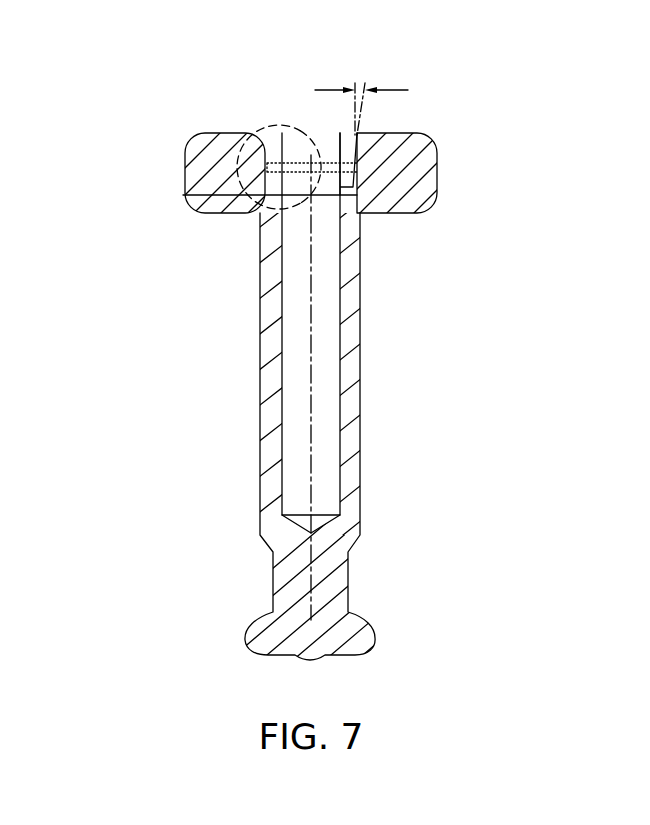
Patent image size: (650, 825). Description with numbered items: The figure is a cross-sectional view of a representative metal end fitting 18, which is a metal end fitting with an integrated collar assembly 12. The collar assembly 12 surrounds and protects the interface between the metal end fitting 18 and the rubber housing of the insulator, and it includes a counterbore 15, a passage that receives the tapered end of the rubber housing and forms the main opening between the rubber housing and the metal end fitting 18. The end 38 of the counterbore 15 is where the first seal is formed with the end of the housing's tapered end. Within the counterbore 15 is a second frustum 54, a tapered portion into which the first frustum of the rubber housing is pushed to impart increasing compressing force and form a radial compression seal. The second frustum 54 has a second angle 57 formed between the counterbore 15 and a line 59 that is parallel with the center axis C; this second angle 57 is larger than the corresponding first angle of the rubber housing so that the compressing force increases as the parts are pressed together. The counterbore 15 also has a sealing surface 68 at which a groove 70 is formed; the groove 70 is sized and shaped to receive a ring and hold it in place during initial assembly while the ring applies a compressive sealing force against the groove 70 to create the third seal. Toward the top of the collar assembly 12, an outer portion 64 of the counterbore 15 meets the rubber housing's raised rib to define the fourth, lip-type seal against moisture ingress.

The collar assembly 12 is at (435, 163).
The counterbore 15 is at (353, 189).
The metal end fitting 18 is at (348, 379).
The end of counterbore 38 is at (262, 213).
The second frustum 54 is at (273, 183).
The second angle 57 is at (387, 90).
The line parallel with center axis 59 is at (355, 88).
The outer portion of counterbore 64 is at (250, 138).
The sealing surface 68 is at (334, 157).
The groove 70 is at (302, 168).
The center axis C is at (312, 310).